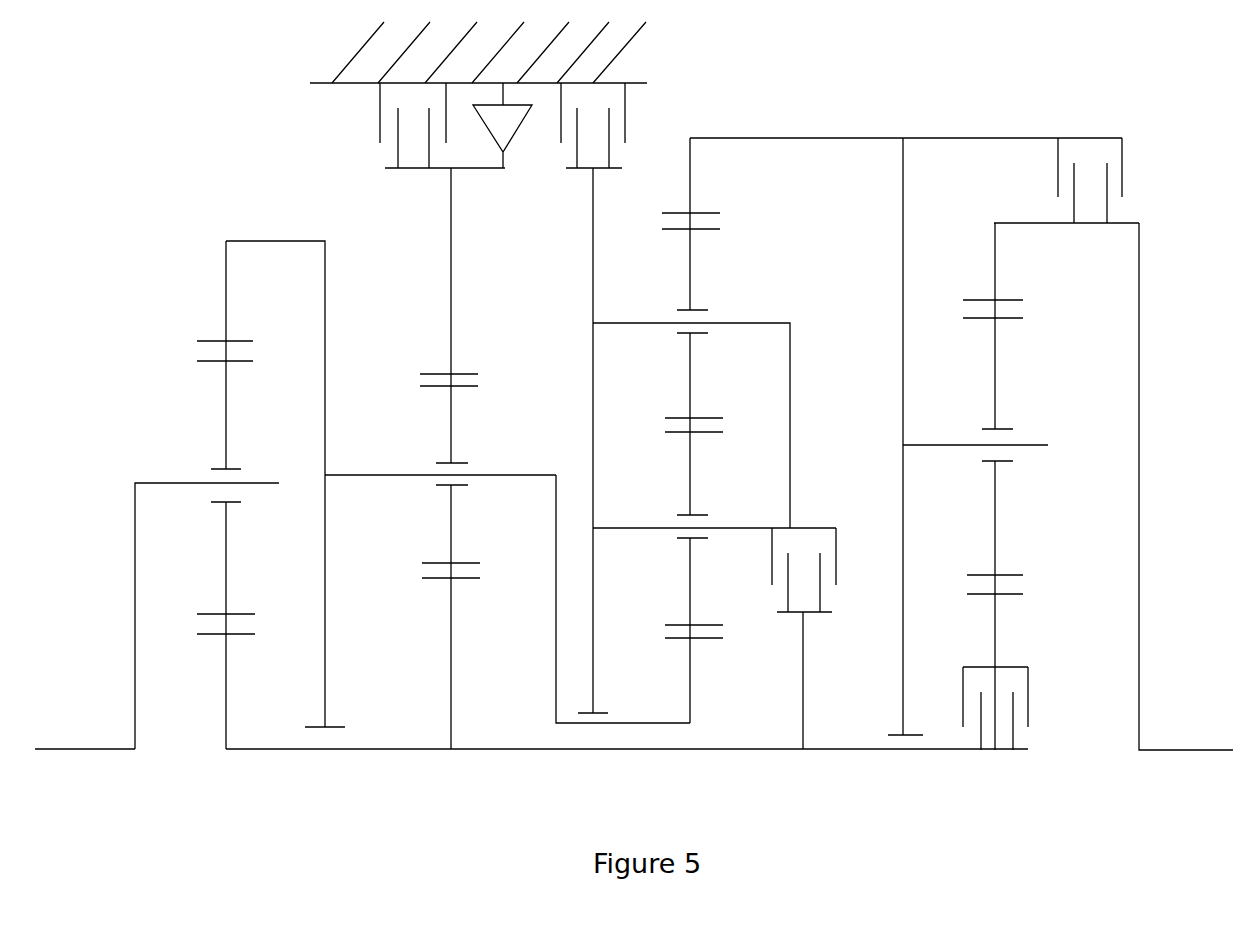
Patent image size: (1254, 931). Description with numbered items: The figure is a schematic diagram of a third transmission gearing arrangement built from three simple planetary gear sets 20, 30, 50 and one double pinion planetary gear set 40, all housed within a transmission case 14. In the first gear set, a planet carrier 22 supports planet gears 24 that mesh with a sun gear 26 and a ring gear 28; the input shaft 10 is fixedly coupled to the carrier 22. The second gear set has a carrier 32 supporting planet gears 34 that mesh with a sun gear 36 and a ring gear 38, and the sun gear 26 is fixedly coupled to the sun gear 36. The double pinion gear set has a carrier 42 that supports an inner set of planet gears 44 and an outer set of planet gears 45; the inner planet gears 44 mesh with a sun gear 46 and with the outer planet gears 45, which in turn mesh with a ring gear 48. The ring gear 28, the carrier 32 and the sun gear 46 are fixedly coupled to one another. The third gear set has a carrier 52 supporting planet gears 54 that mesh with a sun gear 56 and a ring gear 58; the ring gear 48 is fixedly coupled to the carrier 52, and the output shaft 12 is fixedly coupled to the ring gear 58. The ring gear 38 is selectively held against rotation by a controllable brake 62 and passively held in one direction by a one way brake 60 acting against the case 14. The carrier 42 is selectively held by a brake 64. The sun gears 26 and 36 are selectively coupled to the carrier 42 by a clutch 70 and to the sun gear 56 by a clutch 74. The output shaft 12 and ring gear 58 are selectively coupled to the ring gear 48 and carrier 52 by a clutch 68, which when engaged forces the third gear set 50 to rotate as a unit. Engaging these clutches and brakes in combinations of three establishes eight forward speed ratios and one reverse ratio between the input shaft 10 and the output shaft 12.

The input shaft 10 is at (73, 749).
The output shaft 12 is at (1200, 750).
The transmission case 14 is at (372, 36).
The planetary gear set 20 is at (238, 526).
The planet carrier 22 is at (135, 550).
The planet gears 24 is at (228, 428).
The sun gear 26 is at (228, 680).
The ring gear 28 is at (227, 298).
The planetary gear set 30 is at (450, 489).
The planet carrier 32 is at (325, 397).
The planet gears 34 is at (452, 430).
The sun gear 36 is at (452, 620).
The ring gear 38 is at (448, 308).
The double pinion planetary gear set 40 is at (635, 489).
The planet carrier 42 is at (593, 357).
The inner planet gears 44 is at (690, 480).
The outer planet gears 45 is at (693, 270).
The sun gear 46 is at (690, 690).
The ring gear 48 is at (690, 170).
The planetary gear set 50 is at (1010, 517).
The planet carrier 52 is at (903, 368).
The planet gears 54 is at (995, 387).
The sun gear 56 is at (995, 640).
The ring gear 58 is at (995, 255).
The one way brake 60 is at (520, 120).
The controllable brake 62 is at (380, 127).
The brake 64 is at (623, 115).
The clutch 68 is at (1122, 160).
The clutch 70 is at (836, 563).
The clutch 74 is at (1028, 707).